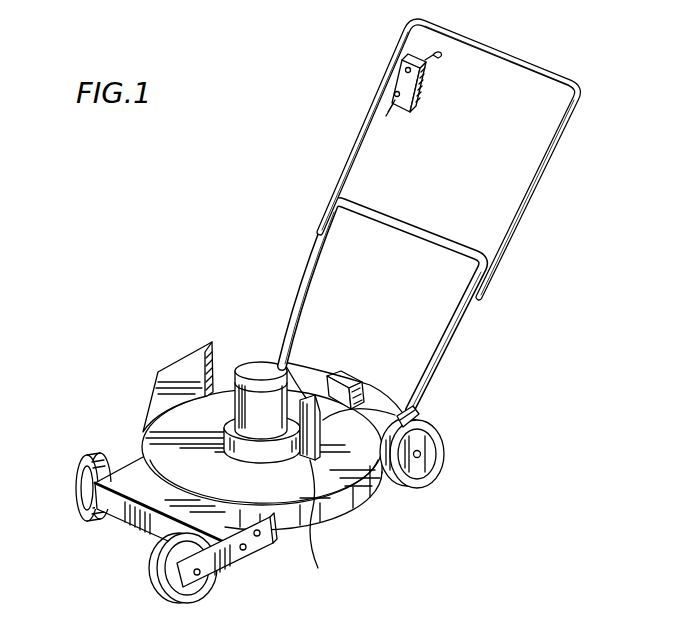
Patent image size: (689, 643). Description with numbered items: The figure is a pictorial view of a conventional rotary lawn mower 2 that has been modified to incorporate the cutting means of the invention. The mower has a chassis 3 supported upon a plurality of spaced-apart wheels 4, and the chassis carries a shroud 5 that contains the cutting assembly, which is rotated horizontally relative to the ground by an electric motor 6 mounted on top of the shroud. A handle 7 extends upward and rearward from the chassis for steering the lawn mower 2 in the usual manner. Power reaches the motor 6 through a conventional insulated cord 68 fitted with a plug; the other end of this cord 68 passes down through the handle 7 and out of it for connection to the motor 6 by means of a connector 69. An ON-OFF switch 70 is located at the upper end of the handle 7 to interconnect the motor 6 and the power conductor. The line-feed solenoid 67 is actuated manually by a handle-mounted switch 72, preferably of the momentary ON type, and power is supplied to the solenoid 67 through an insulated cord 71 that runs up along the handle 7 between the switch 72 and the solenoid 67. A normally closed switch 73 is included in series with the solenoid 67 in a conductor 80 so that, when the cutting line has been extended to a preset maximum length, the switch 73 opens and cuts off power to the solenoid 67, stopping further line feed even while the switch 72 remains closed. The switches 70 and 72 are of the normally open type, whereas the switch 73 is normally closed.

The rotary lawn mower 2 is at (176, 266).
The chassis 3 is at (143, 533).
The wheels 4 is at (76, 497).
The shroud 5 is at (358, 500).
The electric motor 6 is at (258, 366).
The handle 7 is at (546, 170).
The solenoid 67 is at (316, 525).
The insulated cord 68 is at (440, 58).
The connector 69 is at (300, 385).
The ON-OFF switch 70 is at (395, 95).
The insulated cord 71 is at (316, 398).
The handle-mounted switch 72 is at (405, 68).
The normally closed switch 73 is at (355, 385).
The conductor 80 is at (419, 411).